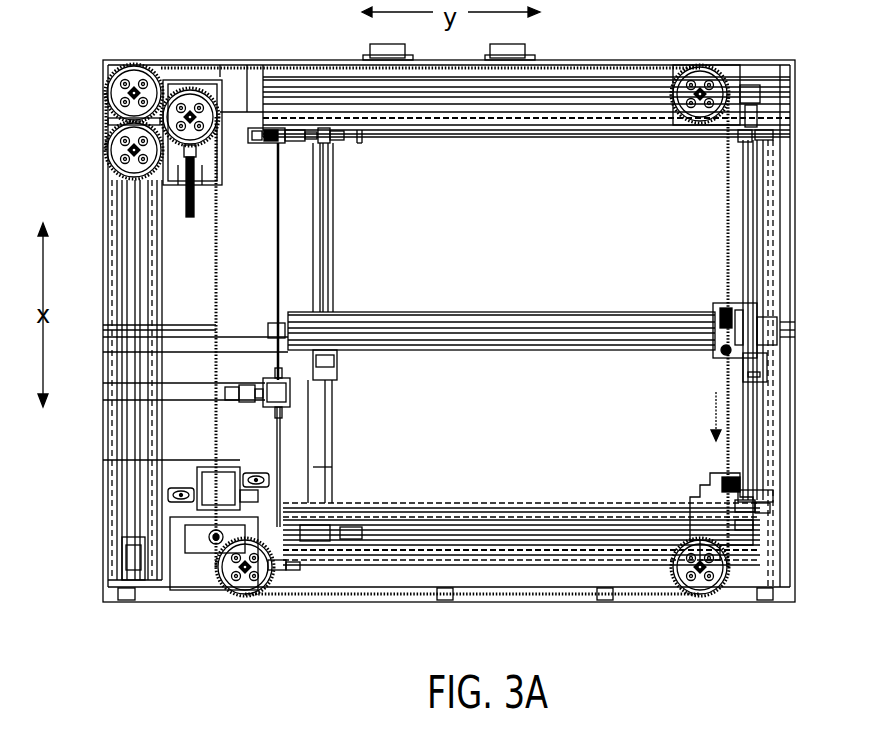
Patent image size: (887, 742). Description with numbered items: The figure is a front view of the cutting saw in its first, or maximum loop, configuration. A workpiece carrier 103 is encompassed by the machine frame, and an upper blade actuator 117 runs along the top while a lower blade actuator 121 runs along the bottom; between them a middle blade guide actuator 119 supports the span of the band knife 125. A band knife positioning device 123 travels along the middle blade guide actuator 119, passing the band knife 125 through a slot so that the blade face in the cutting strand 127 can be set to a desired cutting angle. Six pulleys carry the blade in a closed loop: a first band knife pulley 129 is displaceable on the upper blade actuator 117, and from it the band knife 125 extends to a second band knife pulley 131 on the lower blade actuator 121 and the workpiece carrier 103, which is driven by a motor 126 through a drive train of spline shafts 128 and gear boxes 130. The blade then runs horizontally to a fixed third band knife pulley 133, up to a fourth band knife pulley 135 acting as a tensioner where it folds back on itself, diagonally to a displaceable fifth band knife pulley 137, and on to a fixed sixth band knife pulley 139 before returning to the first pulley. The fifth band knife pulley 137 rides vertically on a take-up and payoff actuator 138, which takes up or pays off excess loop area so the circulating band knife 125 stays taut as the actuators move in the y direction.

The workpiece carrier 103 is at (792, 530).
The upper blade actuator 117 is at (597, 79).
The middle blade guide actuator 119 is at (628, 326).
The lower blade actuator 121 is at (623, 557).
The band knife positioning device 123 is at (733, 350).
The band knife 125 is at (728, 468).
The motor 126 is at (290, 395).
The cutting strand 127 is at (728, 377).
The spline shafts 128 is at (280, 213).
The first band knife pulley 129 is at (701, 78).
The gear boxes 130 is at (260, 128).
The second band knife pulley 131 is at (700, 583).
The third band knife pulley 133 is at (243, 583).
The fourth band knife pulley 135 is at (190, 100).
The fifth band knife pulley 137 is at (103, 157).
The take-up and payoff actuator 138 is at (110, 440).
The sixth band knife pulley 139 is at (112, 92).